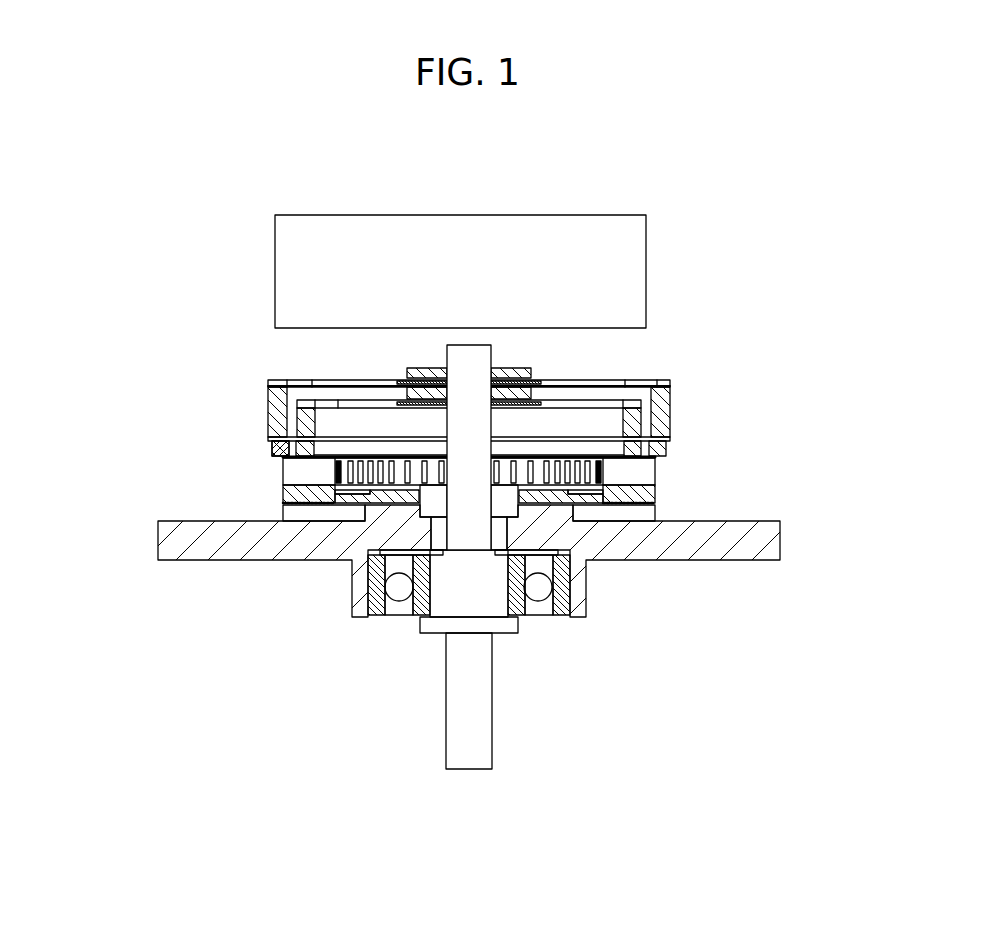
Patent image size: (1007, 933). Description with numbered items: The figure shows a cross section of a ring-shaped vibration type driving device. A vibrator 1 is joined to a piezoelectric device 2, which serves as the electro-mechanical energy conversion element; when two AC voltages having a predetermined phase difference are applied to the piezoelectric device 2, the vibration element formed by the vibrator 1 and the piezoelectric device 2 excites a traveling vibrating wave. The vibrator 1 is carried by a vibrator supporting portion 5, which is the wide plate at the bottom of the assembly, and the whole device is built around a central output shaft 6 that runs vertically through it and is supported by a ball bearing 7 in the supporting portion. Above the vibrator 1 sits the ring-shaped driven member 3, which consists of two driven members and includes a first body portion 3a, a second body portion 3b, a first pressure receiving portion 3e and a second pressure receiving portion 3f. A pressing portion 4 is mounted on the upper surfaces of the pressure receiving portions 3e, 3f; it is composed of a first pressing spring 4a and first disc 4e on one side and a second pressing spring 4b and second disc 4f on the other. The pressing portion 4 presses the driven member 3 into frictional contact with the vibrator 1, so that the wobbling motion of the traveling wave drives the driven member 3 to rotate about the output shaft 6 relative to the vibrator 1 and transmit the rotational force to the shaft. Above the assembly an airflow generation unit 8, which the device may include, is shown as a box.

The vibrator 1 is at (640, 487).
The piezoelectric device 2 is at (647, 505).
The driven member 3 is at (339, 436).
The first body portion 3a is at (273, 446).
The second body portion 3b is at (310, 425).
The first pressure receiving portion 3e is at (272, 412).
The second pressure receiving portion 3f is at (268, 457).
The pressing portion 4 is at (551, 337).
The first pressing spring 4a is at (597, 376).
The second pressing spring 4b is at (698, 412).
The first disc 4e is at (512, 375).
The second disc 4f is at (540, 383).
The vibrator supporting portion 5 is at (723, 553).
The output shaft 6 is at (460, 372).
The ball bearing 7 is at (537, 597).
The airflow generation unit 8 is at (583, 227).